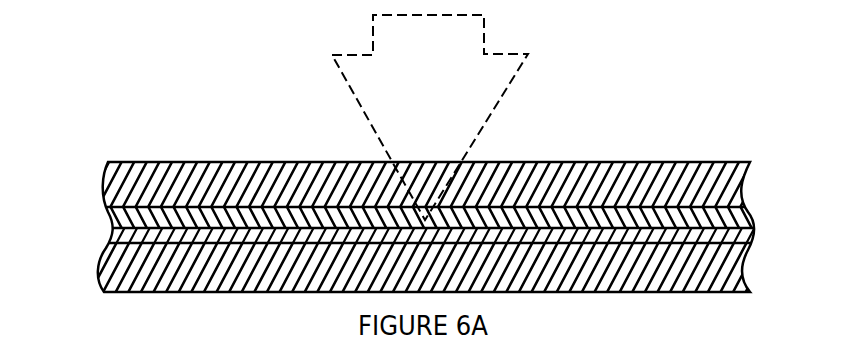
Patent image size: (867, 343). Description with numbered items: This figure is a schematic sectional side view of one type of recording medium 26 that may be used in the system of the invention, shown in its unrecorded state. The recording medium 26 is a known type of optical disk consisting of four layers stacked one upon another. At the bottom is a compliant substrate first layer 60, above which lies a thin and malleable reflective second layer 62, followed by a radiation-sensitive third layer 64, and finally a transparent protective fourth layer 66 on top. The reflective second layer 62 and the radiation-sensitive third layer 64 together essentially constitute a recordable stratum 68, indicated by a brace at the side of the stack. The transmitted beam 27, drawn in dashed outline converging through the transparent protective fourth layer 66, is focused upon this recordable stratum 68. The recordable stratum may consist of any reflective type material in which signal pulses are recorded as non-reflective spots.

The recording medium 26 is at (605, 162).
The transmitted beam 27 is at (430, 117).
The compliant substrate first layer 60 is at (406, 267).
The thin and malleable reflective second layer 62 is at (423, 235).
The radiation-sensitive third layer 64 is at (431, 217).
The transparent protective fourth layer 66 is at (412, 184).
The recordable stratum 68 is at (428, 225).